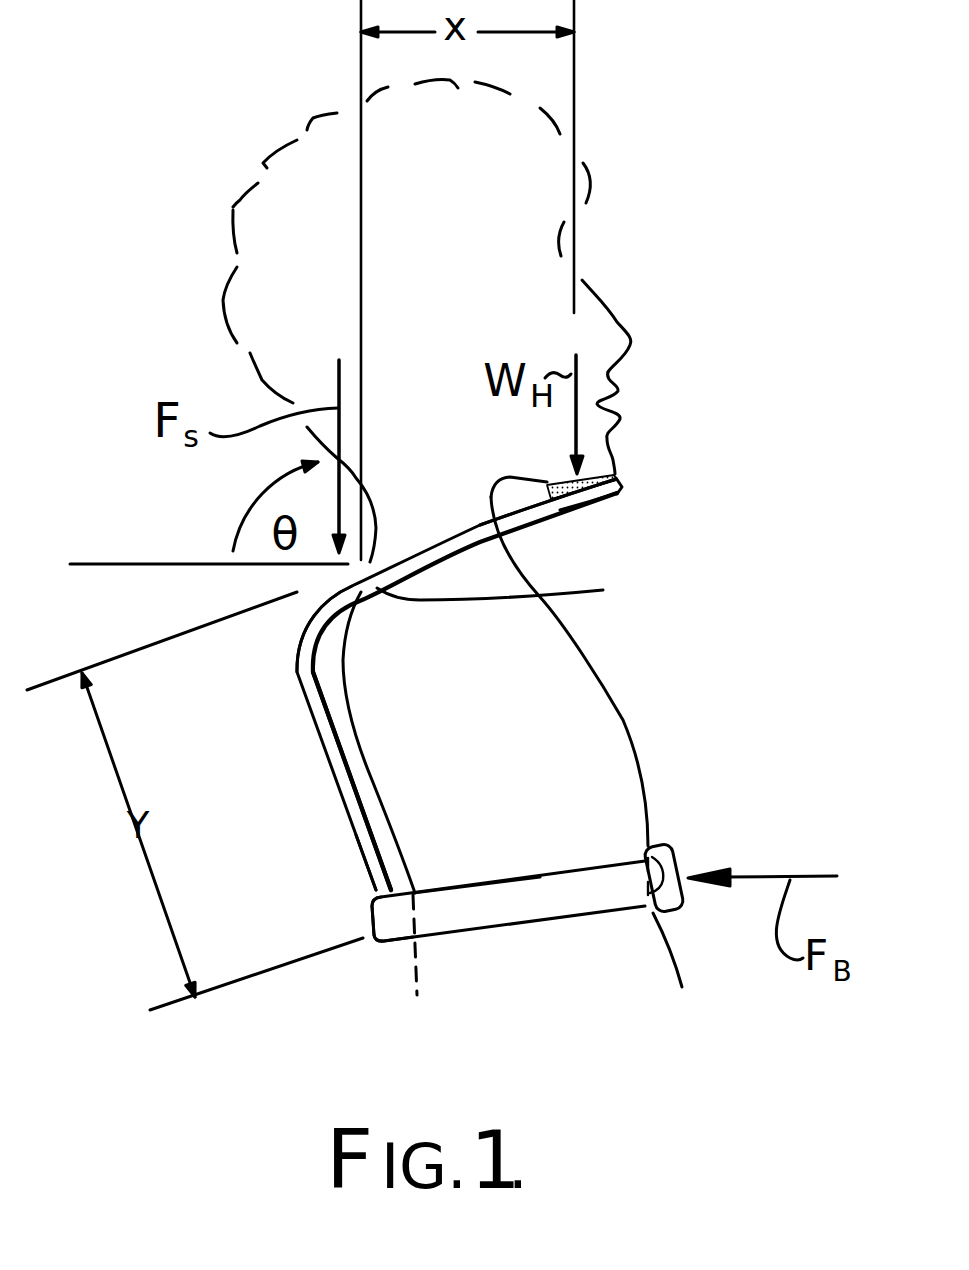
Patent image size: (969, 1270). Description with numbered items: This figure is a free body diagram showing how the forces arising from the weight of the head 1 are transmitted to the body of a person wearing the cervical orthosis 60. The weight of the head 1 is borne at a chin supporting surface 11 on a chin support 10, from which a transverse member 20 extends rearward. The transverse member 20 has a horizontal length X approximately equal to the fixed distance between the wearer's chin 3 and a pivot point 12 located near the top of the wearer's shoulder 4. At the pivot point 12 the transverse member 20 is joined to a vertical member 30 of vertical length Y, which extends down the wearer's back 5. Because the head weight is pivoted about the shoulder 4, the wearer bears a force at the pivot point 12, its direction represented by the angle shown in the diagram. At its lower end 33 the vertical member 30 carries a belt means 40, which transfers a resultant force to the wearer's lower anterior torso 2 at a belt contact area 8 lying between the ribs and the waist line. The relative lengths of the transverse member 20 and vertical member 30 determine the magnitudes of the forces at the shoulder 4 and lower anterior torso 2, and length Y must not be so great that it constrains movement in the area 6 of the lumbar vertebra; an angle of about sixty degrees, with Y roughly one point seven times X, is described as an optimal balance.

The head 1 is at (267, 206).
The lower anterior torso 2 is at (523, 940).
The chin 3 is at (598, 451).
The shoulder 4 is at (362, 606).
The back 5 is at (345, 716).
The area of the lumbar vertebra 6 is at (390, 960).
The belt contact area 8 is at (670, 850).
The chin support 10 is at (613, 494).
The chin supporting surface 11 is at (620, 470).
The pivot point 12 is at (515, 592).
The transverse member 20 is at (534, 514).
The vertical member 30 is at (343, 793).
The lower end of vertical member 33 is at (374, 885).
The belt means 40 is at (534, 887).
The cervical orthosis 60 is at (287, 664).